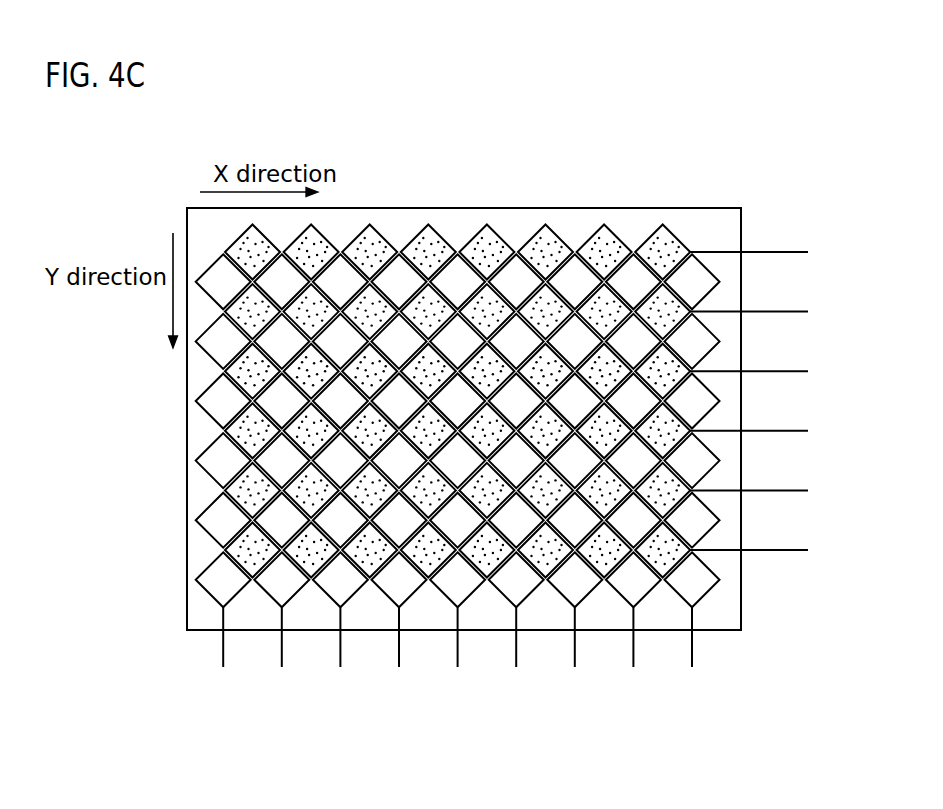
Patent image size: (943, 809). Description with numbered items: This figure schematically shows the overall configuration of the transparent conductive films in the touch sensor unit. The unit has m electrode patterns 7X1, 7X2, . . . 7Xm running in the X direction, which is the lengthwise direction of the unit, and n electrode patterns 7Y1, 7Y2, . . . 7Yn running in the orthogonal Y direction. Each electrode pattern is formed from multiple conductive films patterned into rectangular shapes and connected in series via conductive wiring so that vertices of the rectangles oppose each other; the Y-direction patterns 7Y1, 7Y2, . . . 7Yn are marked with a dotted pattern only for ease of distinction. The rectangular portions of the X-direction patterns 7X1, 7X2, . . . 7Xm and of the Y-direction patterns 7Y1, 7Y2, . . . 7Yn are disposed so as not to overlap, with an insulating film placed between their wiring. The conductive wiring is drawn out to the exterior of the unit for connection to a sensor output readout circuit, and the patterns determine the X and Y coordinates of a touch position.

The electrode pattern 7Y1 is at (762, 251).
The electrode pattern 7Y2 is at (762, 311).
The electrode pattern 7Yn is at (762, 549).
The electrode pattern 7X1 is at (223, 650).
The electrode pattern 7X2 is at (282, 650).
The electrode pattern 7Xm is at (692, 647).